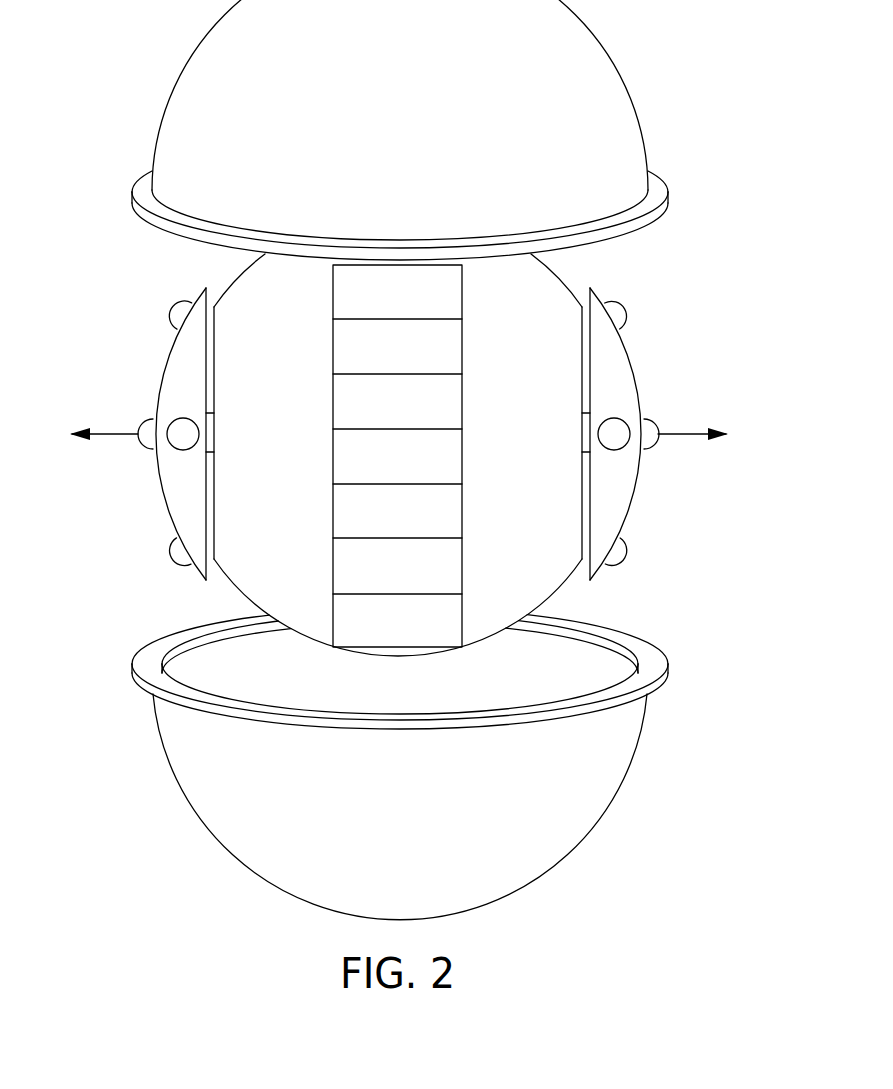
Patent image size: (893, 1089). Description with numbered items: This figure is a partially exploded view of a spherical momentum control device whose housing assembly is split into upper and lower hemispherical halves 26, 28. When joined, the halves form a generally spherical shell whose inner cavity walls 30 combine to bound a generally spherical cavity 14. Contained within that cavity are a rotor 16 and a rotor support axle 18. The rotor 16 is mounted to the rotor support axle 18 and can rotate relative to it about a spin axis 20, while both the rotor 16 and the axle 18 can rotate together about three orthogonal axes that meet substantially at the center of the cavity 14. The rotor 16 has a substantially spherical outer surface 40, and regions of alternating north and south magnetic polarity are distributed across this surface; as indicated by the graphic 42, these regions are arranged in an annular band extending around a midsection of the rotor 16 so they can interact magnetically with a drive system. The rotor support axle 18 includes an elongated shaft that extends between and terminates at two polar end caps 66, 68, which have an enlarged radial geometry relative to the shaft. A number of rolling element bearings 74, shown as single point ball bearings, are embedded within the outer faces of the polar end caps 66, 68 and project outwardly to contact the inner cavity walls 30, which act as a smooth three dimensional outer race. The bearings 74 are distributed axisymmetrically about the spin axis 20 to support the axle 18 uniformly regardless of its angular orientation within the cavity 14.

The generally spherical cavity 14 is at (408, 698).
The rotor 16 is at (536, 284).
The rotor support axle 18 is at (143, 368).
The spin axis 20 is at (100, 434).
The upper hemispherical half 26 is at (197, 52).
The lower hemispherical half 28 is at (206, 822).
The inner cavity walls 30 is at (192, 656).
The outer surface 40 is at (242, 282).
The graphic 42 is at (467, 263).
The polar end cap 66 is at (170, 515).
The polar end cap 68 is at (630, 515).
The rolling element bearings 74 is at (177, 306).